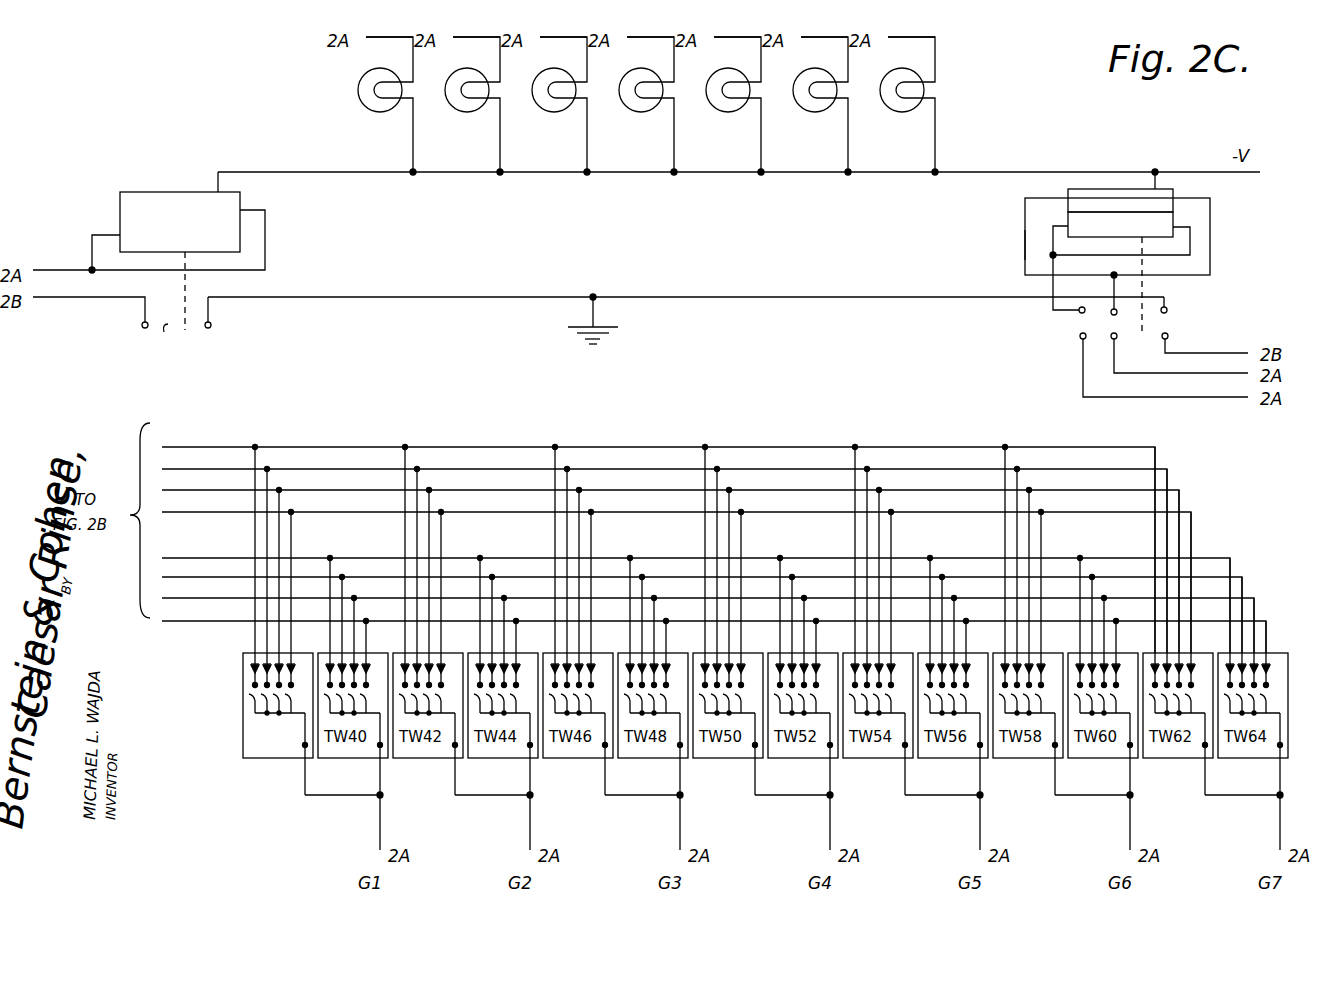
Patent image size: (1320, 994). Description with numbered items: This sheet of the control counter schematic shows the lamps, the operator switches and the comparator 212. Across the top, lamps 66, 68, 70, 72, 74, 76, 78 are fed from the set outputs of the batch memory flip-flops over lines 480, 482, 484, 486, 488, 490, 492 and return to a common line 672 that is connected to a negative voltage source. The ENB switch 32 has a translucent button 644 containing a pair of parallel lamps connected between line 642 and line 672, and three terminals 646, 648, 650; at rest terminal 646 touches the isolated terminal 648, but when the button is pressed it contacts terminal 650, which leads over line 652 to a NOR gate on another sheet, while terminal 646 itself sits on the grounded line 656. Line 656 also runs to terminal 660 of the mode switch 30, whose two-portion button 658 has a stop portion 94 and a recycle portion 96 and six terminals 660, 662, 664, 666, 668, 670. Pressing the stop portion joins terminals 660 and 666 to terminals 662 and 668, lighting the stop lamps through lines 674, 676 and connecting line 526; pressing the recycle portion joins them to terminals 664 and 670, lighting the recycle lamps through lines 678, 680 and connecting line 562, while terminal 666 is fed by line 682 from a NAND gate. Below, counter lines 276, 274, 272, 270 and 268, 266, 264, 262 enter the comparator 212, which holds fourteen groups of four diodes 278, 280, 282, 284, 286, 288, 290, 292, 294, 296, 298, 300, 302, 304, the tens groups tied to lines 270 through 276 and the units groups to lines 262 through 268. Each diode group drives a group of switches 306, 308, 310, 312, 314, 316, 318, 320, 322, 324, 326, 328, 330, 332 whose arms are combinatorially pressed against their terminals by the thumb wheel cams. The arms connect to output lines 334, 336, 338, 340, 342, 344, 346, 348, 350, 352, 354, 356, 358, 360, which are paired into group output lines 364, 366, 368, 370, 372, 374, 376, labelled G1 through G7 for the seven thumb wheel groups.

The lamp 66 is at (378, 112).
The lamp 68 is at (465, 112).
The lamp 70 is at (552, 112).
The lamp 72 is at (639, 112).
The lamp 74 is at (726, 112).
The lamp 76 is at (813, 112).
The lamp 78 is at (900, 112).
The line 480 is at (400, 28).
The line 482 is at (487, 28).
The line 484 is at (574, 28).
The line 486 is at (661, 28).
The line 488 is at (748, 28).
The line 490 is at (835, 28).
The line 492 is at (922, 28).
The line 672 is at (545, 175).
The translucent button 644 is at (240, 204).
The line 642 is at (52, 268).
The line 652 is at (50, 297).
The terminal 650 is at (142, 325).
The terminal 648 is at (148, 344).
The terminal 646 is at (211, 325).
The ENB switch 32 is at (180, 334).
The line 656 is at (397, 298).
The button 658 is at (1172, 190).
The stop portion 94 is at (1168, 203).
The recycle portion 96 is at (1150, 233).
The line 676 is at (1210, 262).
The line 674 is at (1025, 248).
The line 678 is at (1053, 226).
The line 680 is at (1190, 233).
The terminal 664 is at (1077, 313).
The terminal 662 is at (1109, 305).
The terminal 660 is at (1168, 312).
The mode switch 30 is at (1027, 340).
The terminal 670 is at (1080, 338).
The terminal 668 is at (1117, 338).
The terminal 666 is at (1168, 337).
The line 562 is at (1175, 397).
The line 526 is at (1240, 372).
The line 682 is at (1235, 350).
The line 276 is at (230, 447).
The line 274 is at (230, 469).
The line 272 is at (230, 490).
The line 270 is at (230, 512).
The line 268 is at (230, 558).
The line 266 is at (230, 577).
The line 264 is at (230, 598).
The line 262 is at (230, 621).
The comparator 212 is at (215, 700).
The first group of diodes 278 is at (303, 668).
The second group of diodes 280 is at (364, 662).
The group of diodes 282 is at (439, 662).
The group of diodes 284 is at (514, 662).
The group of diodes 286 is at (589, 662).
The group of diodes 288 is at (664, 662).
The group of diodes 290 is at (739, 662).
The group of diodes 292 is at (814, 662).
The group of diodes 294 is at (889, 662).
The group of diodes 296 is at (964, 662).
The group of diodes 298 is at (1039, 662).
The group of diodes 300 is at (1114, 662).
The group of diodes 302 is at (1189, 662).
The group of diodes 304 is at (1266, 662).
The group of switches 306 is at (243, 690).
The group of switches 308 is at (368, 693).
The group of switches 310 is at (443, 693).
The group of switches 312 is at (518, 693).
The group of switches 314 is at (593, 693).
The group of switches 316 is at (668, 693).
The group of switches 318 is at (743, 693).
The group of switches 320 is at (818, 693).
The group of switches 322 is at (893, 693).
The group of switches 324 is at (968, 693).
The group of switches 326 is at (1043, 693).
The group of switches 328 is at (1118, 693).
The group of switches 330 is at (1193, 693).
The group of switches 332 is at (1270, 693).
The output line 334 is at (304, 778).
The output line 336 is at (379, 778).
The output line 338 is at (454, 778).
The output line 340 is at (529, 778).
The output line 342 is at (604, 778).
The output line 344 is at (679, 778).
The output line 346 is at (754, 778).
The output line 348 is at (829, 778).
The output line 350 is at (904, 778).
The output line 352 is at (979, 778).
The output line 354 is at (1054, 778).
The output line 356 is at (1129, 778).
The output line 358 is at (1204, 778).
The output line 360 is at (1279, 778).
The output line 364 is at (379, 818).
The output line 366 is at (529, 818).
The output line 368 is at (679, 818).
The output line 370 is at (829, 818).
The output line 372 is at (979, 818).
The output line 374 is at (1129, 818).
The output line 376 is at (1279, 818).